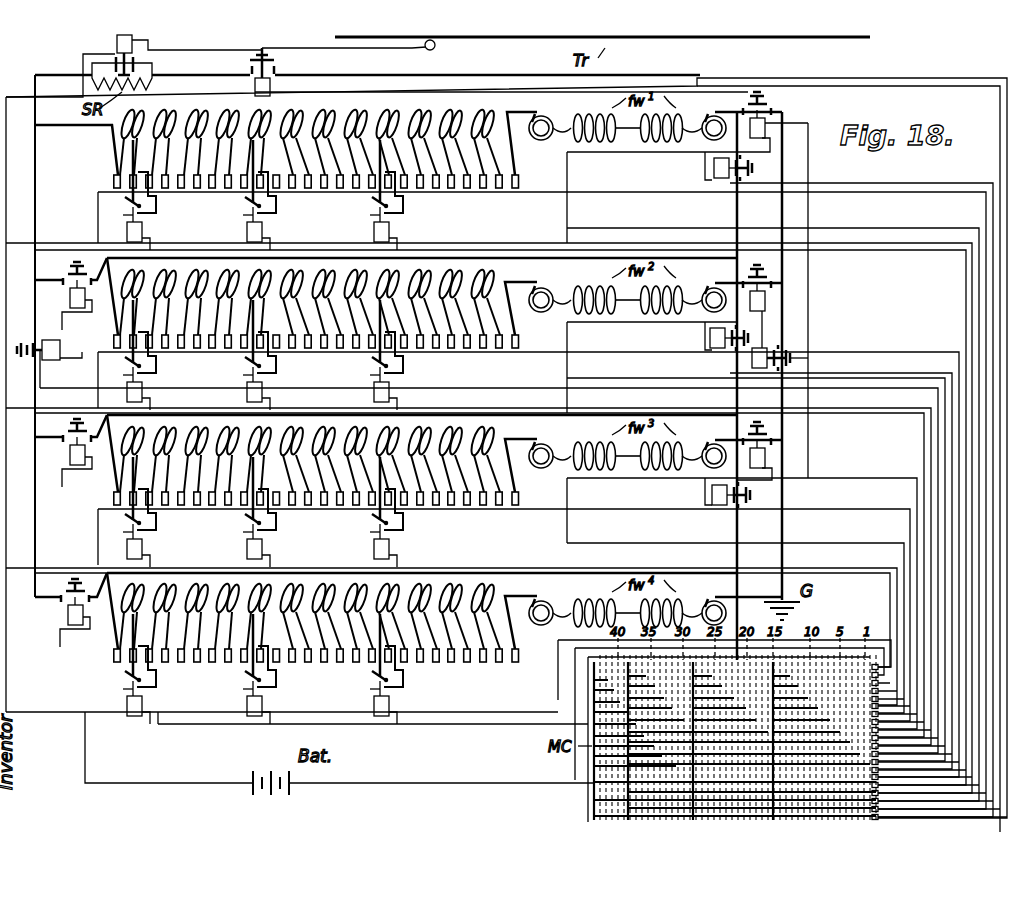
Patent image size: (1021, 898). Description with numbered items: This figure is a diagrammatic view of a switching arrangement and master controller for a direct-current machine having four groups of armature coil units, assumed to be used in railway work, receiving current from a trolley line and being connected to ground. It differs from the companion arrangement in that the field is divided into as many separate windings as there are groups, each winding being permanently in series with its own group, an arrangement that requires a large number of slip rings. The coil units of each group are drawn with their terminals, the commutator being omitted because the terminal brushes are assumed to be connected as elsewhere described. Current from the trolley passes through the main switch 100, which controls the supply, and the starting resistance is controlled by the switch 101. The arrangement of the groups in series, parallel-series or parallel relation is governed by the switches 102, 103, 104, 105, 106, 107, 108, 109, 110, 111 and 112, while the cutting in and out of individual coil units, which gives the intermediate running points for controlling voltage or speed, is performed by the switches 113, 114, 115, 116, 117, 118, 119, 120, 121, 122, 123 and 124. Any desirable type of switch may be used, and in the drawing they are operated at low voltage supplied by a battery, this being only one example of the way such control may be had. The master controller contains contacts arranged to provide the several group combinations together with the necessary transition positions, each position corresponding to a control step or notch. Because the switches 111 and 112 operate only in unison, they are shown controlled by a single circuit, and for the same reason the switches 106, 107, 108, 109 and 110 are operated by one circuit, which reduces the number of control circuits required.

The main switch 100 is at (255, 91).
The starting resistance switch 101 is at (115, 58).
The group-arrangement switch 102 is at (714, 167).
The group-arrangement switch 103 is at (710, 337).
The group-arrangement switch 104 is at (712, 494).
The group-arrangement switch 105 is at (70, 273).
The group-arrangement switch 106 is at (70, 428).
The group-arrangement switch 107 is at (68, 613).
The group-arrangement switch 108 is at (770, 454).
The group-arrangement switch 109 is at (760, 300).
The group-arrangement switch 110 is at (760, 125).
The group-arrangement switch 111 is at (792, 356).
The group-arrangement switch 112 is at (49, 342).
The coil-unit switch 113 is at (127, 232).
The coil-unit switch 114 is at (247, 232).
The coil-unit switch 115 is at (374, 232).
The coil-unit switch 116 is at (127, 390).
The coil-unit switch 117 is at (247, 390).
The coil-unit switch 118 is at (374, 390).
The coil-unit switch 119 is at (127, 547).
The coil-unit switch 120 is at (247, 547).
The coil-unit switch 121 is at (374, 547).
The coil-unit switch 122 is at (127, 704).
The coil-unit switch 123 is at (247, 704).
The coil-unit switch 124 is at (374, 704).